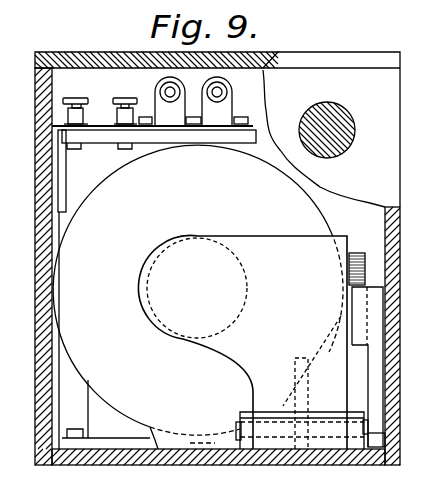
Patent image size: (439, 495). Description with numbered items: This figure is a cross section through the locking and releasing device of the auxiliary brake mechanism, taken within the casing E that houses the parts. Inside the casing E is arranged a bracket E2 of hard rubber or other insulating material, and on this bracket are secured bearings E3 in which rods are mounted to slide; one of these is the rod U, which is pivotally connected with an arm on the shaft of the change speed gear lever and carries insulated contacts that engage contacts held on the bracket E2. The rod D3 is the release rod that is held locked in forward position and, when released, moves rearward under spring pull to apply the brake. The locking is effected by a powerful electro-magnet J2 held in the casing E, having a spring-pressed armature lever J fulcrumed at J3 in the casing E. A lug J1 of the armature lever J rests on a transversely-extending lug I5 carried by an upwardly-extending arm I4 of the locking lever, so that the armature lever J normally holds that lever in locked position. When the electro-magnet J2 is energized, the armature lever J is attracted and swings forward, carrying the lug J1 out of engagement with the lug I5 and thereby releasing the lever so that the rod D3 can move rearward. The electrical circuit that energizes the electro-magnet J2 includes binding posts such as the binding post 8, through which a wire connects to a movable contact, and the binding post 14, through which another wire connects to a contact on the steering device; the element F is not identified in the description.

The casing E is at (98, 64).
The bracket E2 is at (103, 140).
The bearings E3 is at (183, 101).
The binding post 8 is at (80, 122).
The binding post 14 is at (120, 99).
The rod U is at (162, 90).
The bearing bracket F is at (226, 90).
The rod D3 is at (344, 149).
The electro-magnet J2 is at (198, 297).
The armature lever J is at (242, 342).
The lug J1 is at (358, 256).
The fulcrum J3 is at (333, 446).
The upwardly-extending arm I4 is at (377, 385).
The transversely-extending lug I5 is at (355, 330).